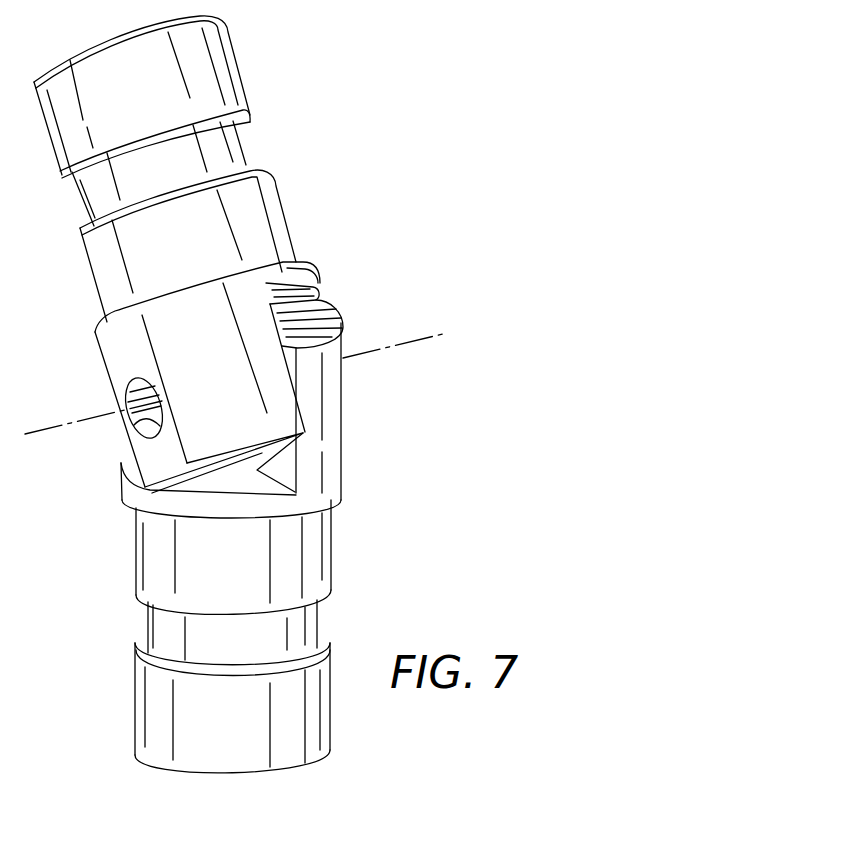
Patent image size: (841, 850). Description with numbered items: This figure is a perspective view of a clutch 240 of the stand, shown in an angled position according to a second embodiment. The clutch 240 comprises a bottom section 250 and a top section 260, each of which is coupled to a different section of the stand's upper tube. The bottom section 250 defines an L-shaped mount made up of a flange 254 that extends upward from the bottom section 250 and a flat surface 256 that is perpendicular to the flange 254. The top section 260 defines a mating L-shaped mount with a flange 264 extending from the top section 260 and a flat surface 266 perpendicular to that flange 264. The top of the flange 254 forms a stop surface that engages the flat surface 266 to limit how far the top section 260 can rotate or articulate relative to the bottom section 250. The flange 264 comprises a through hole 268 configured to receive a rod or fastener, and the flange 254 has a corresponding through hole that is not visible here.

The clutch 240 is at (385, 203).
The bottom section 250 is at (328, 560).
The flange 254 is at (328, 454).
The flat surface 256 is at (205, 490).
The top section 260 is at (248, 198).
The flange 264 is at (128, 363).
The flat surface 266 is at (300, 296).
The through hole 268 is at (130, 425).